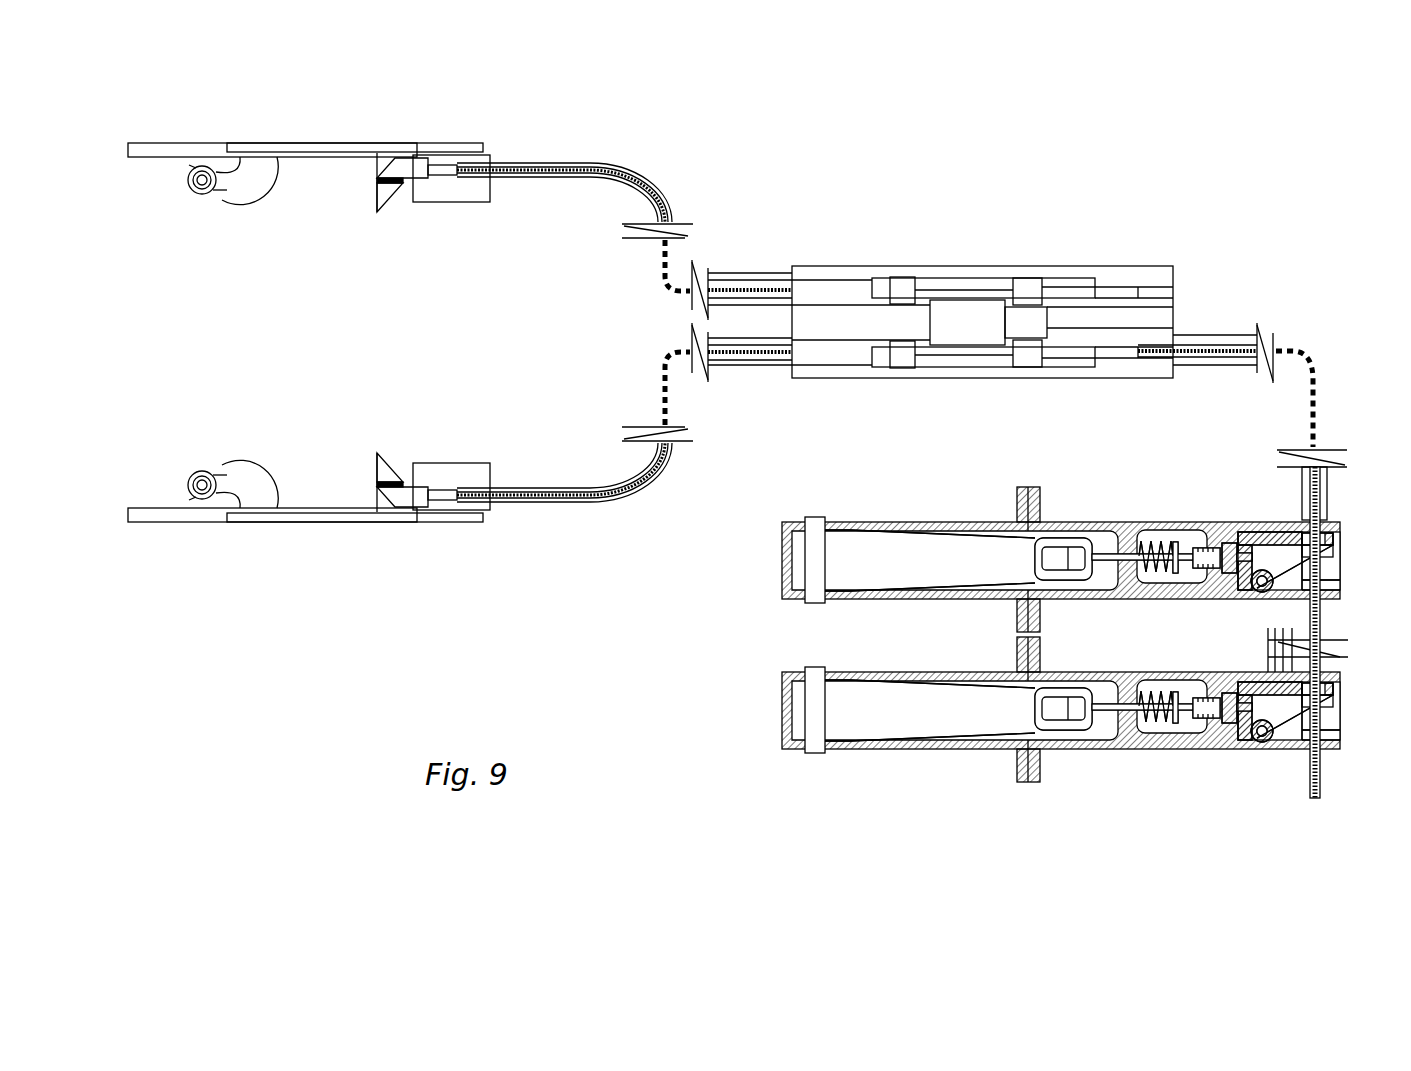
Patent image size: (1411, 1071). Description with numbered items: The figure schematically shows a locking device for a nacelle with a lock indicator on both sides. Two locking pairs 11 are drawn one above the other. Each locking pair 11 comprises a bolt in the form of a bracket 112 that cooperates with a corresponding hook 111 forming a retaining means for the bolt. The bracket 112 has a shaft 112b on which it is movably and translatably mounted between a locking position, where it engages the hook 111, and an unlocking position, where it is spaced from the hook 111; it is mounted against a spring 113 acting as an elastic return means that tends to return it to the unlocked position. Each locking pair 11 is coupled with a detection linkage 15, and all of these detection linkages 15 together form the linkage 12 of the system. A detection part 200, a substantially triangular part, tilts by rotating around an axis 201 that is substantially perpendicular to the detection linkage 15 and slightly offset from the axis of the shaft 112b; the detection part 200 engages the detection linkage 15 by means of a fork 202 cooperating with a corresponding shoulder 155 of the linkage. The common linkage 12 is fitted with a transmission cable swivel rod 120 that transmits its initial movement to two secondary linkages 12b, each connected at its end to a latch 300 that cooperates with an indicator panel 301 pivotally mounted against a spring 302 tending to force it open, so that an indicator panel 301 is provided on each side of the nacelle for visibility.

The locking pair 11 is at (1046, 634).
The hook 111 is at (912, 712).
The bracket 112 is at (1108, 560).
The shaft 112b is at (1193, 712).
The spring 113 is at (1166, 724).
The linkage 12 is at (588, 496).
The secondary linkage 12b is at (590, 172).
The transmission cable swivel rod 120 is at (962, 313).
The detection linkage 15 is at (1338, 590).
The shoulder 155 is at (1327, 556).
The detection part 200 is at (1279, 553).
The axis 201 is at (1257, 586).
The fork 202 is at (1338, 540).
The latch 300 is at (408, 172).
The indicator panel 301 is at (319, 143).
The spring 302 is at (217, 198).